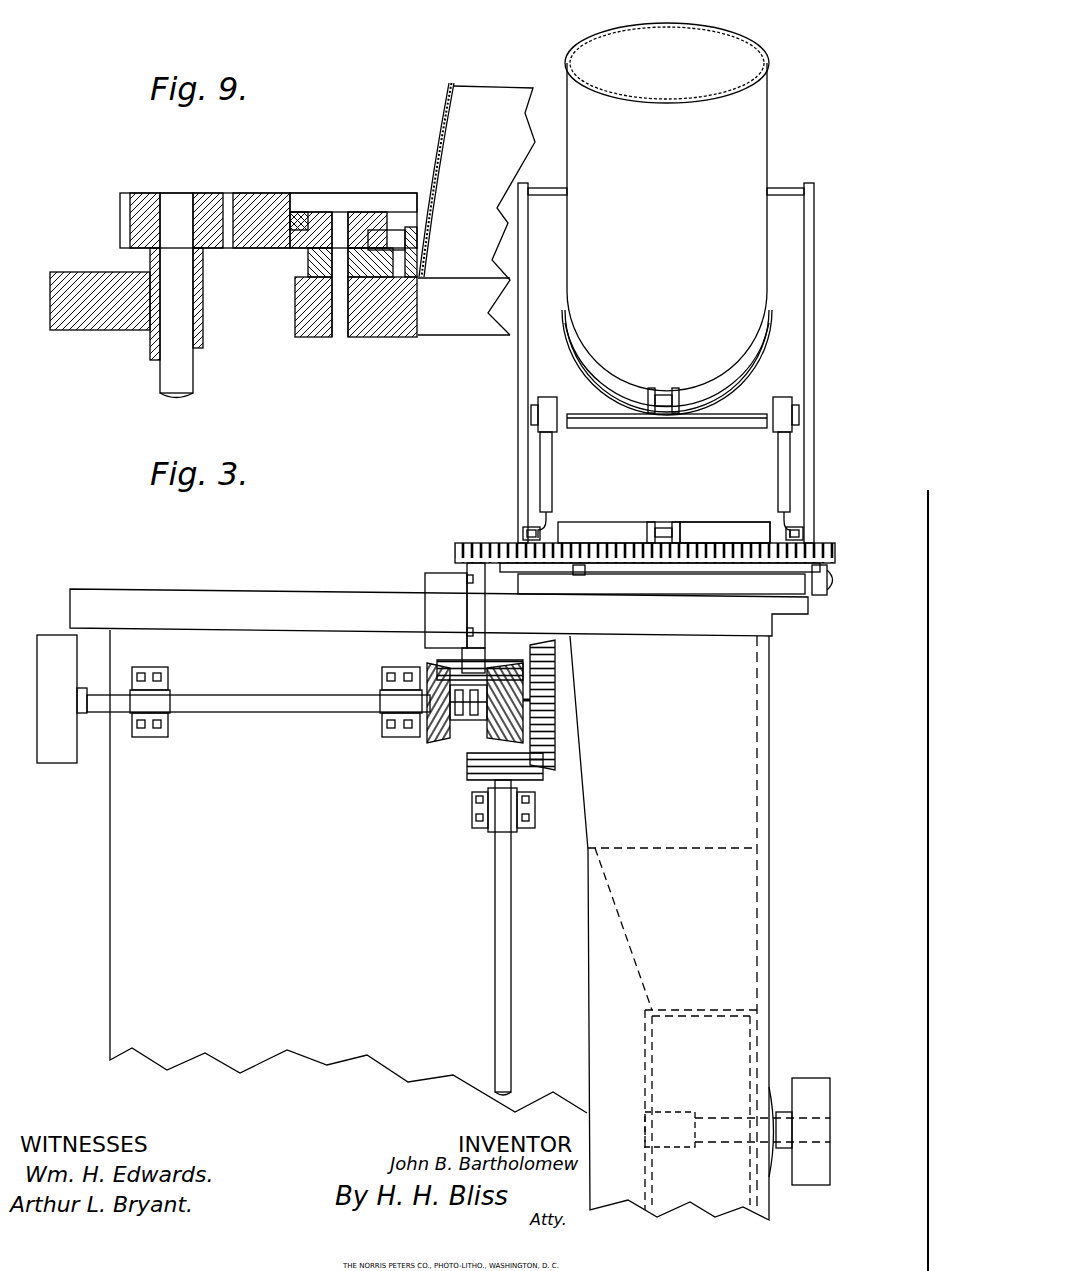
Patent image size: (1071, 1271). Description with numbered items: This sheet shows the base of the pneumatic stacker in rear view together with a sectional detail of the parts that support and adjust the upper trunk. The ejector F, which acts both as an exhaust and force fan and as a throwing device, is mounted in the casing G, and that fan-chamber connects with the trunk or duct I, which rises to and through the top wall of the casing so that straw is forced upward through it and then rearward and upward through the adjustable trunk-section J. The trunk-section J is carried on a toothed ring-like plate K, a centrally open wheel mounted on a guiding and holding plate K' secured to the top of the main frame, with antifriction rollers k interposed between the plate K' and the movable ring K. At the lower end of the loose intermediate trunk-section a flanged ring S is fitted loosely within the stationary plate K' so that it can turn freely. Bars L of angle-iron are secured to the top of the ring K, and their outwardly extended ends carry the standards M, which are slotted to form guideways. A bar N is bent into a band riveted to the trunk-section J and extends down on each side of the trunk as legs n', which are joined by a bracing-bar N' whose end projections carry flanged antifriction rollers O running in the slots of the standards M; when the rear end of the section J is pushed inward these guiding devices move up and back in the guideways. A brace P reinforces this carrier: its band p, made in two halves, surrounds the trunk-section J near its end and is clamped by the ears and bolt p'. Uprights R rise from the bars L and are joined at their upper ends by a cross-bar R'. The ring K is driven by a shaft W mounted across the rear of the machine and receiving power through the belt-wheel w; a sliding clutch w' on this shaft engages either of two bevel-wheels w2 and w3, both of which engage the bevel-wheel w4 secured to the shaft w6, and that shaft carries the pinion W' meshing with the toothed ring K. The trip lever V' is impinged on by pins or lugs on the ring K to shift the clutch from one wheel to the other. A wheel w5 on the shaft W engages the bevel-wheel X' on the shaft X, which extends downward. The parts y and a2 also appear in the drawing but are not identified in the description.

In FIG. 9, the pinion W' is at (268, 205).
In FIG. 3, the pinion W' is at (620, 555).
In FIG. 9, the shaft w6 is at (180, 375).
In FIG. 9, the toothed ring K is at (353, 214).
In FIG. 3, the toothed ring K is at (678, 589).
In FIG. 9, the antifriction rollers k is at (305, 210).
In FIG. 9, the guiding and holding plate K' is at (318, 274).
In FIG. 9, the flanged ring S is at (418, 288).
In FIG. 3, the trunk-section J is at (667, 207).
In FIG. 3, the uprights R is at (658, 363).
In FIG. 3, the cross-bar R' is at (669, 175).
In FIG. 3, the band bar N is at (653, 352).
In FIG. 3, the legs n' is at (652, 392).
In FIG. 3, the bracing-bar N' is at (667, 437).
In FIG. 3, the antifriction rollers O is at (532, 416).
In FIG. 3, the standards M is at (540, 466).
In FIG. 3, the bars L is at (522, 530).
In FIG. 3, the brace P is at (664, 517).
In FIG. 3, the ears and bolt p' is at (664, 519).
In FIG. 3, the band p is at (725, 514).
In FIG. 3, the stop y is at (579, 575).
In FIG. 3, the trip lever V' is at (428, 618).
In FIG. 3, the belt-wheel w is at (62, 699).
In FIG. 3, the shaft W is at (258, 702).
In FIG. 3, the bevel-wheel w2 is at (432, 742).
In FIG. 3, the bevel-wheel w4 is at (440, 662).
In FIG. 3, the bevel-wheel w3 is at (520, 728).
In FIG. 3, the sliding clutch w' is at (468, 717).
In FIG. 3, the wheel w5 is at (555, 692).
In FIG. 3, the bevel-wheel X' is at (483, 771).
In FIG. 3, the shaft X is at (503, 937).
In FIG. 3, the trunk or duct I is at (669, 928).
In FIG. 3, the fan casing G is at (750, 815).
In FIG. 3, the ejector F is at (737, 1110).
In FIG. 3, the apron a2 is at (348, 871).